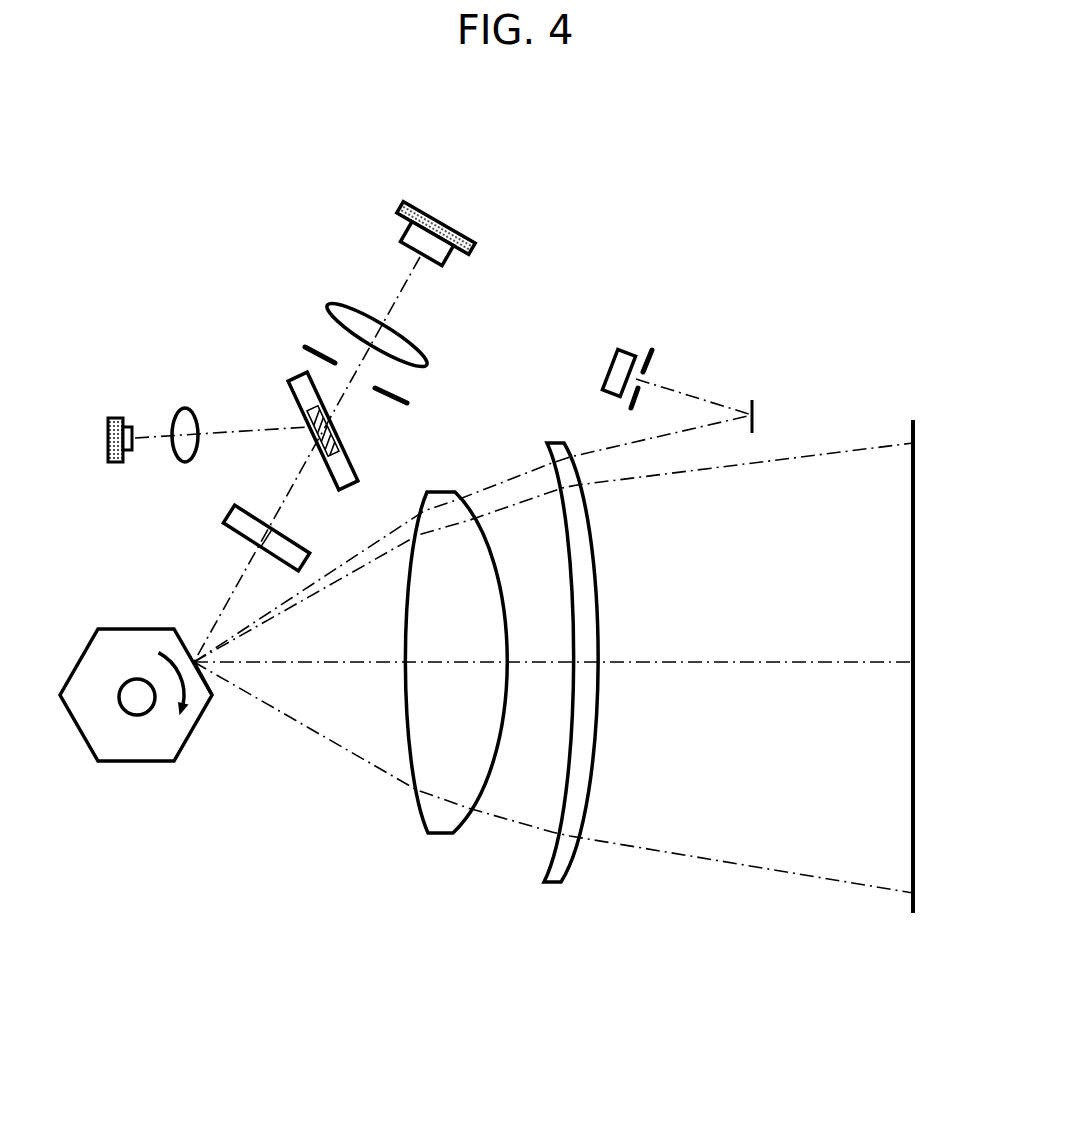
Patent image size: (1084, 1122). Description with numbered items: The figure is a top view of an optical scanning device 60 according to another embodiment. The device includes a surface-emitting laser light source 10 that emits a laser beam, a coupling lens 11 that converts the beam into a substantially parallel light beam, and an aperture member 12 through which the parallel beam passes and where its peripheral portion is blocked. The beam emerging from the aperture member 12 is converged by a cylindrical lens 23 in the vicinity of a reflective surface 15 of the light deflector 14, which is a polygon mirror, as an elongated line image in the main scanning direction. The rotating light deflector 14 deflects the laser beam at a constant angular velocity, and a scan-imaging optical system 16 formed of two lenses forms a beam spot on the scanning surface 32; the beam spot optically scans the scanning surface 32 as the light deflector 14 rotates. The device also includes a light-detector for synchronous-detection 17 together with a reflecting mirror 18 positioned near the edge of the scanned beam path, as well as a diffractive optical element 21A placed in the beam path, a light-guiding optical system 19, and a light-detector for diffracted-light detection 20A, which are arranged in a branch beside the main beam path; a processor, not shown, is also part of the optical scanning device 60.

The optical scanning device 60 is at (168, 284).
The surface-emitting laser light source 10 is at (438, 252).
The coupling lens 11 is at (347, 313).
The aperture member 12 is at (313, 346).
The diffractive optical element 21A is at (298, 389).
The light-guiding optical system 19 is at (187, 410).
The light-detector for diffracted-light detection 20A is at (115, 417).
The cylindrical lens 23 is at (227, 512).
The light deflector 14 is at (113, 753).
The reflective surface 15 is at (195, 637).
The scan-imaging optical system 16 is at (442, 823).
The light-detector for synchronous-detection 17 is at (641, 341).
The reflecting mirror 18 is at (752, 420).
The scanning surface 32 is at (913, 540).